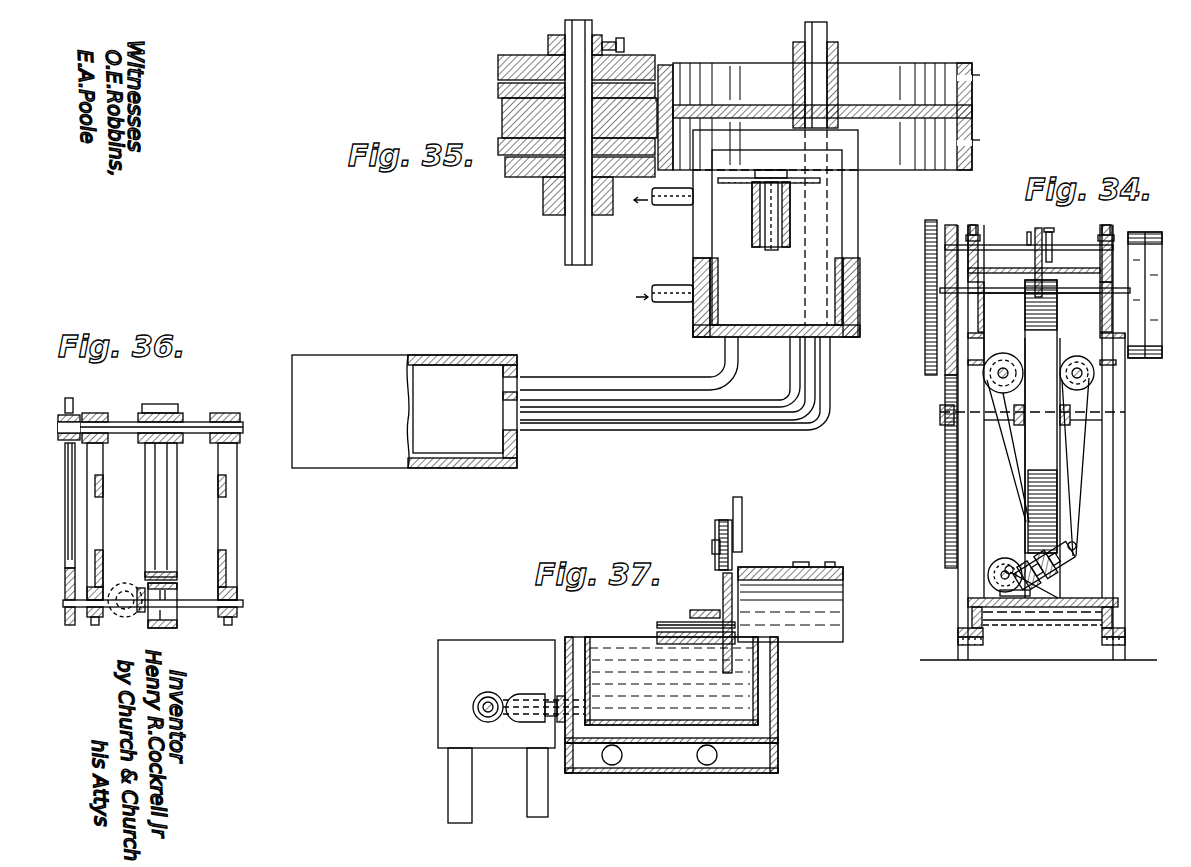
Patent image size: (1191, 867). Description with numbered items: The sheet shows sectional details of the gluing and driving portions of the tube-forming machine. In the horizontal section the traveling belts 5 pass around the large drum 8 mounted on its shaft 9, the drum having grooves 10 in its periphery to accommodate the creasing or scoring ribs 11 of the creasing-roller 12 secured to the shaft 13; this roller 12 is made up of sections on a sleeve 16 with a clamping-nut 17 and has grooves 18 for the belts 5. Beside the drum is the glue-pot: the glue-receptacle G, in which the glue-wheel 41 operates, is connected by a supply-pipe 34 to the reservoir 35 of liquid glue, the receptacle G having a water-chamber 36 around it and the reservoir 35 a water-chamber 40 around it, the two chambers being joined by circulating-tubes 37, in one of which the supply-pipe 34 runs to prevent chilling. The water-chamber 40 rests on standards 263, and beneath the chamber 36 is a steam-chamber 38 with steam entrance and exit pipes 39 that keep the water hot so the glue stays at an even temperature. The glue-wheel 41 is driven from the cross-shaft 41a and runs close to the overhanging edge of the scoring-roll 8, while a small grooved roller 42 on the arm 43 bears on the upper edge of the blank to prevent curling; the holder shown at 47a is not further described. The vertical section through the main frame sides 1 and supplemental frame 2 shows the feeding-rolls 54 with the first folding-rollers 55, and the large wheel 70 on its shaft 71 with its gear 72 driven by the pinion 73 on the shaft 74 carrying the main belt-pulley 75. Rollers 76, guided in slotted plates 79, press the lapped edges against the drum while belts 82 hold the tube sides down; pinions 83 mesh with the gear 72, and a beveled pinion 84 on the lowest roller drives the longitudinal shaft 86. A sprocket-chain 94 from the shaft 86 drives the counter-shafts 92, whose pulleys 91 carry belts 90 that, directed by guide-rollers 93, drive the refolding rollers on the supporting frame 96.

In FIG. 34, the sides of main frame 1 is at (1114, 480).
In FIG. 34, the supplemental frame 2 is at (978, 262).
In FIG. 35, the traveling belts 5 is at (655, 170).
In FIG. 37, the traveling belts 5 is at (800, 562).
In FIG. 35, the roller or drum 8 is at (878, 70).
In FIG. 37, the roller or drum 8 is at (845, 590).
In FIG. 35, the shaft 9 is at (828, 30).
In FIG. 35, the grooves 10 is at (979, 116).
In FIG. 37, the grooves 10 is at (840, 558).
In FIG. 35, the creasing or scoring ribs 11 is at (500, 150).
In FIG. 35, the creasing-roller 12 is at (518, 176).
In FIG. 35, the shaft 13 is at (565, 240).
In FIG. 35, the sleeve 16 is at (550, 50).
In FIG. 35, the clamping-nut 17 is at (543, 210).
In FIG. 35, the grooves 18 is at (502, 108).
In FIG. 35, the glue-supply pipe 34 is at (640, 418).
In FIG. 37, the glue-supply pipe 34 is at (484, 712).
In FIG. 35, the reservoir 35 is at (404, 411).
In FIG. 37, the reservoir 35 is at (496, 694).
In FIG. 35, the water-chamber 36 is at (852, 285).
In FIG. 37, the water-chamber 36 is at (780, 683).
In FIG. 35, the circulating-tubes 37 is at (600, 376).
In FIG. 37, the circulating-tubes 37 is at (476, 702).
In FIG. 37, the steam-chamber 38 is at (780, 752).
In FIG. 35, the steam entrance and exit pipes 39 is at (663, 245).
In FIG. 37, the steam entrance and exit pipes 39 is at (622, 755).
In FIG. 35, the water-chamber 40 is at (456, 462).
In FIG. 35, the glue-wheel 41 is at (790, 190).
In FIG. 37, the glue-wheel 41 is at (723, 588).
In FIG. 37, the cross-shaft 41a is at (668, 622).
In FIG. 37, the grooved roller 42 is at (716, 528).
In FIG. 37, the arm 43 is at (742, 517).
In FIG. 35, the blade holder 47a is at (771, 250).
In FIG. 34, the feeding-rolls 54 is at (1041, 232).
In FIG. 34, the folding-rollers 55 is at (1052, 237).
In FIG. 34, the drum or wheel 70 is at (1022, 344).
In FIG. 36, the drum or wheel 70 is at (173, 552).
In FIG. 34, the shaft 71 is at (1000, 418).
In FIG. 36, the shaft 71 is at (200, 434).
In FIG. 34, the gear 72 is at (946, 460).
In FIG. 36, the gear 72 is at (65, 535).
In FIG. 34, the pinion 73 is at (978, 312).
In FIG. 34, the shaft 74 is at (1000, 296).
In FIG. 34, the main belt-pulley 75 is at (1138, 302).
In FIG. 36, the rollers 76 is at (177, 617).
In FIG. 36, the plates 79 is at (103, 545).
In FIG. 36, the conveying and holding belts 82 is at (158, 628).
In FIG. 36, the pinion 83 is at (65, 618).
In FIG. 36, the beveled pinion 84 is at (138, 612).
In FIG. 34, the longitudinally-extending shaft 86 is at (1000, 578).
In FIG. 34, the belts 90 is at (1080, 500).
In FIG. 34, the pulleys 91 is at (1077, 370).
In FIG. 34, the counter-shafts 92 is at (1005, 370).
In FIG. 34, the guide-rollers 93 is at (1072, 563).
In FIG. 34, the sprocket-chain 94 is at (984, 500).
In FIG. 34, the supporting plate or frame 96 is at (1068, 608).
In FIG. 37, the standards 263 is at (535, 788).
In FIG. 35, the glue-receptacle G is at (700, 240).
In FIG. 37, the glue-receptacle G is at (604, 642).